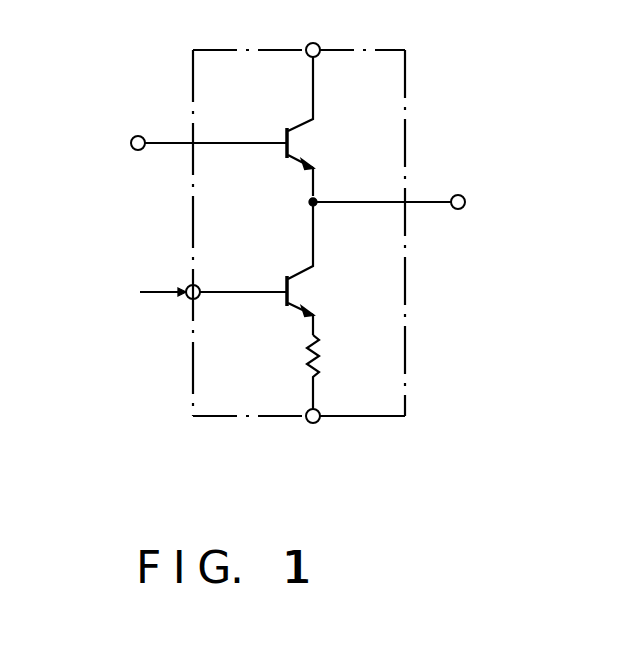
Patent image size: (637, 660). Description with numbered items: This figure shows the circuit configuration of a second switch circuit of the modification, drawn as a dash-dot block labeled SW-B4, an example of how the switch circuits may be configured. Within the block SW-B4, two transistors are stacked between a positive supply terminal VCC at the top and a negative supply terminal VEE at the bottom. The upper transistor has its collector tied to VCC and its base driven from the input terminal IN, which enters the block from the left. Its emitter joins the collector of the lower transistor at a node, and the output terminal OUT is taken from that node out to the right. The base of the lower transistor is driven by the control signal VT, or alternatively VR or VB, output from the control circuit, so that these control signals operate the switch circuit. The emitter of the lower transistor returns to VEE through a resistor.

The second switch circuit SW-B4 is at (298, 212).
The positive supply terminal VCC is at (317, 31).
The negative supply terminal VEE is at (317, 437).
The input terminal IN is at (192, 144).
The output terminal OUT is at (415, 204).
The control signal VT is at (173, 309).